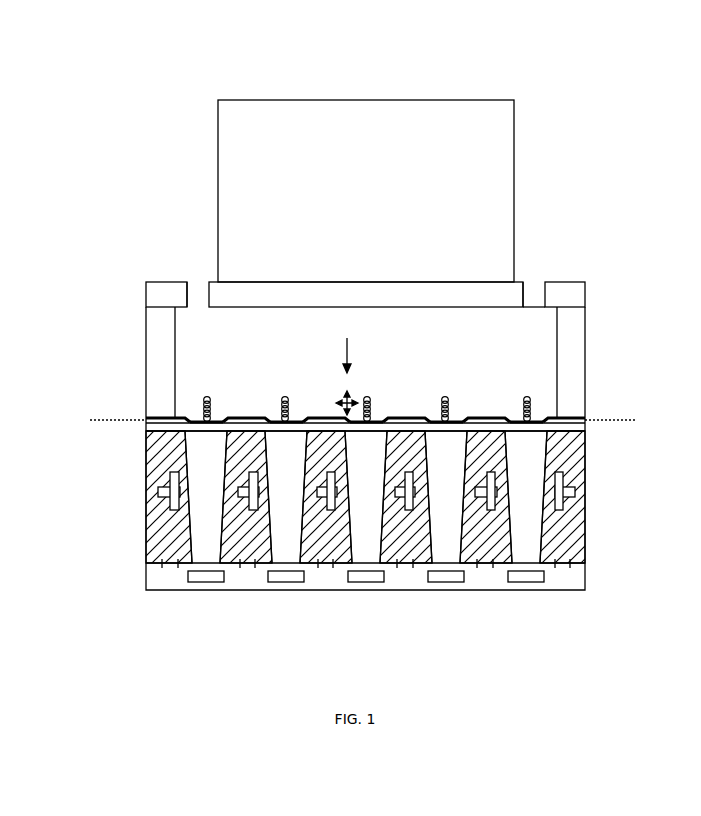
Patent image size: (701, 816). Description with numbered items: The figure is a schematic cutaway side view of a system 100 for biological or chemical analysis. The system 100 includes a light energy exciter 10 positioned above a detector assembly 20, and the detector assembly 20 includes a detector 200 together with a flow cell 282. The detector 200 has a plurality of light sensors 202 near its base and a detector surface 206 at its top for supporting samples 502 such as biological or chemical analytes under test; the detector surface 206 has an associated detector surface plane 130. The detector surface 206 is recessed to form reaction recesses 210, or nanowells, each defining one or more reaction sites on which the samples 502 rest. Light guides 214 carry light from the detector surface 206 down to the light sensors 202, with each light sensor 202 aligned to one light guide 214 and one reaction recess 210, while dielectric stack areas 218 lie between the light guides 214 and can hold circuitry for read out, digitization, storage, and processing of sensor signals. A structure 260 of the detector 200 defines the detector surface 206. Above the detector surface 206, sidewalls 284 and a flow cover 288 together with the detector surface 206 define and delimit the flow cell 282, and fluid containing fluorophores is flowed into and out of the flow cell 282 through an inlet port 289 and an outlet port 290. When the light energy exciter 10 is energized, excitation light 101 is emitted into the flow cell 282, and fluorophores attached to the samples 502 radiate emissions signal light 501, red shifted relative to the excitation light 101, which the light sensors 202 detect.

The system 100 is at (565, 107).
The light energy exciter 10 is at (371, 195).
The detector assembly 20 is at (85, 283).
The excitation light 101 is at (347, 345).
The detector surface plane 130 is at (100, 416).
The detector 200 is at (135, 418).
The light sensors 202 is at (203, 583).
The detector surface 206 is at (235, 417).
The reaction recesses 210 is at (298, 417).
The light guides 214 is at (194, 489).
The dielectric stack areas 218 is at (247, 548).
The structure 260 is at (588, 432).
The flow cell 282 is at (499, 332).
The sidewalls 284 is at (158, 352).
The flow cover 288 is at (523, 286).
The inlet port 289 is at (195, 287).
The outlet port 290 is at (533, 290).
The emissions signal light 501 is at (355, 393).
The samples 502 is at (208, 396).